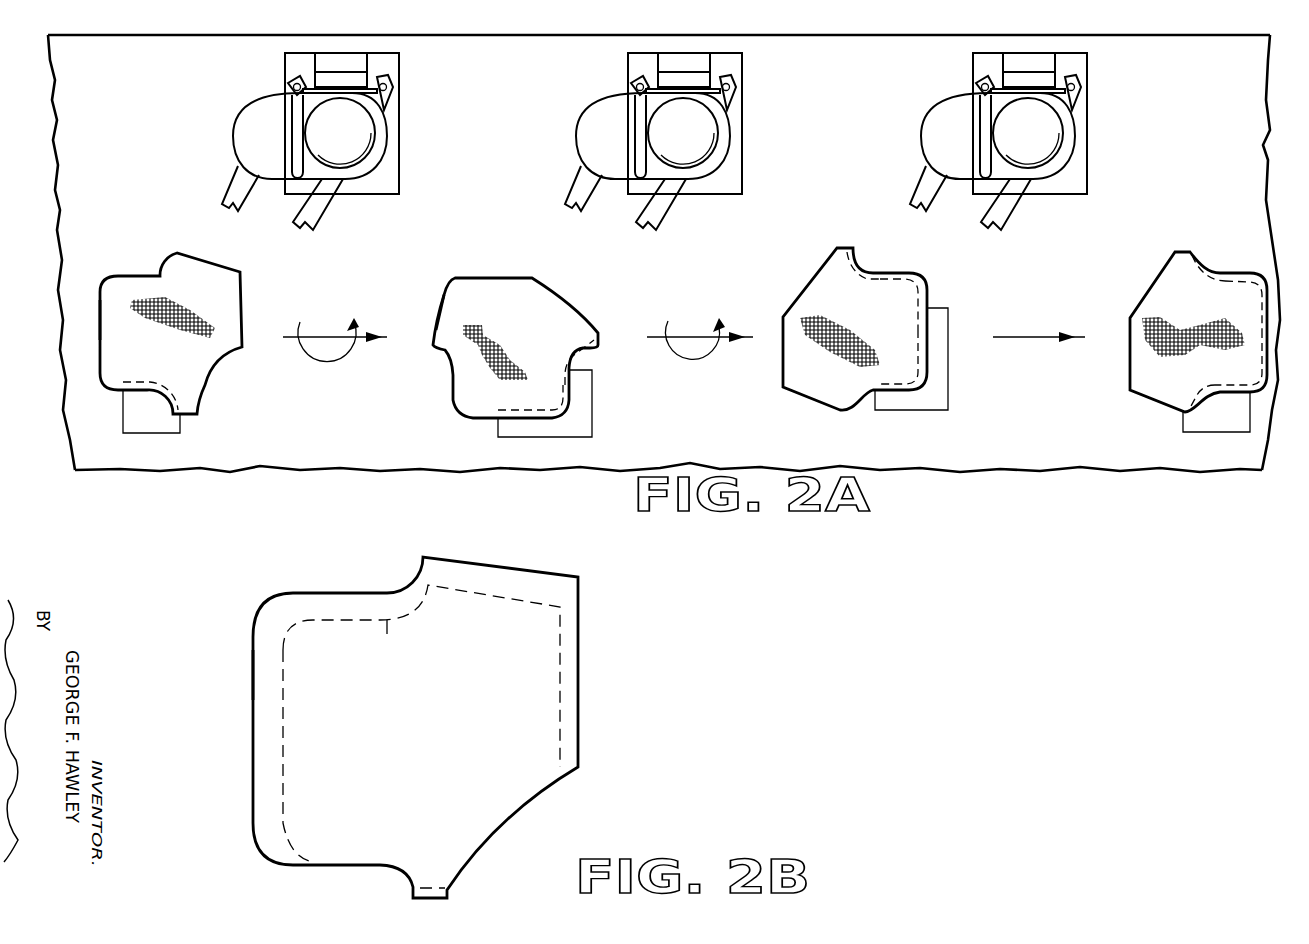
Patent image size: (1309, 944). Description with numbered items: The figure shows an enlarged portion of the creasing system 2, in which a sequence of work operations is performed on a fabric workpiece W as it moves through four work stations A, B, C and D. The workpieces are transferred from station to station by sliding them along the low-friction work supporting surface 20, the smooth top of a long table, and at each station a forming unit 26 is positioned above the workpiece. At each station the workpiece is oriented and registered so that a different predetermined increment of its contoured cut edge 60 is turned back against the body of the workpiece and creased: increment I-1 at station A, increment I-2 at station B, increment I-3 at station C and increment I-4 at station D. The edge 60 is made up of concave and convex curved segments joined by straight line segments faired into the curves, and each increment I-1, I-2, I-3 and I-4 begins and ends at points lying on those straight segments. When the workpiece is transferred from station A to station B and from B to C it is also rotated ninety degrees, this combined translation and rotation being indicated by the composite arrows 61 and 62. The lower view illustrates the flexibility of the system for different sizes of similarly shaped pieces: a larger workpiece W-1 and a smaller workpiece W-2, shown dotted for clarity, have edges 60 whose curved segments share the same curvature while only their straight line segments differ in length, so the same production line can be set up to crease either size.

In FIG. 2A, the forming apparatus 2 is at (45, 212).
In FIG. 2A, the low-friction work supporting surface 20 is at (398, 462).
In FIG. 2A, the forming unit 26 is at (250, 88).
In FIG. 2A, the fabric workpiece W is at (226, 276).
In FIG. 2A, the contoured cut edge 60 is at (100, 318).
In FIG. 2B, the contoured cut edge 60 is at (282, 668).
In FIG. 2A, the composite arrow 61 is at (374, 340).
In FIG. 2A, the composite arrow 62 is at (328, 361).
In FIG. 2A, the first increment I-1 is at (145, 390).
In FIG. 2A, the second increment I-2 is at (568, 402).
In FIG. 2A, the third increment I-3 is at (922, 376).
In FIG. 2A, the fourth increment I-4 is at (1195, 397).
In FIG. 2A, the work station A is at (178, 446).
In FIG. 2A, the work station B is at (517, 446).
In FIG. 2A, the work station C is at (907, 446).
In FIG. 2A, the work station D is at (1197, 446).
In FIG. 2B, the larger workpiece W-1 is at (290, 602).
In FIG. 2B, the smaller workpiece W-2 is at (385, 607).